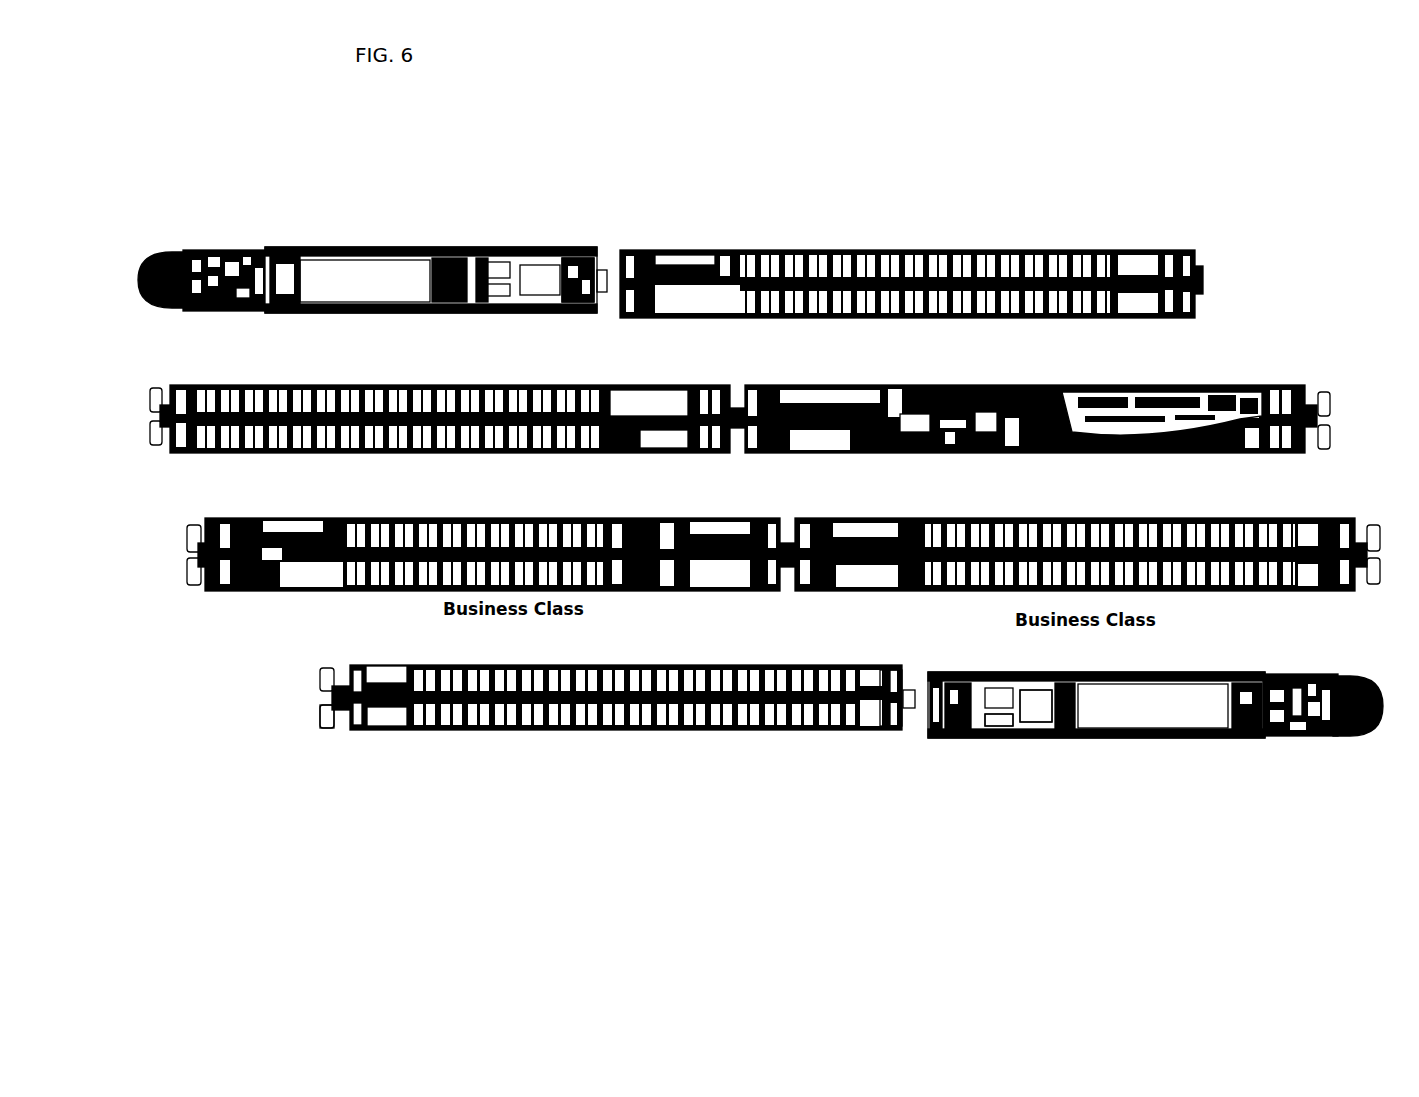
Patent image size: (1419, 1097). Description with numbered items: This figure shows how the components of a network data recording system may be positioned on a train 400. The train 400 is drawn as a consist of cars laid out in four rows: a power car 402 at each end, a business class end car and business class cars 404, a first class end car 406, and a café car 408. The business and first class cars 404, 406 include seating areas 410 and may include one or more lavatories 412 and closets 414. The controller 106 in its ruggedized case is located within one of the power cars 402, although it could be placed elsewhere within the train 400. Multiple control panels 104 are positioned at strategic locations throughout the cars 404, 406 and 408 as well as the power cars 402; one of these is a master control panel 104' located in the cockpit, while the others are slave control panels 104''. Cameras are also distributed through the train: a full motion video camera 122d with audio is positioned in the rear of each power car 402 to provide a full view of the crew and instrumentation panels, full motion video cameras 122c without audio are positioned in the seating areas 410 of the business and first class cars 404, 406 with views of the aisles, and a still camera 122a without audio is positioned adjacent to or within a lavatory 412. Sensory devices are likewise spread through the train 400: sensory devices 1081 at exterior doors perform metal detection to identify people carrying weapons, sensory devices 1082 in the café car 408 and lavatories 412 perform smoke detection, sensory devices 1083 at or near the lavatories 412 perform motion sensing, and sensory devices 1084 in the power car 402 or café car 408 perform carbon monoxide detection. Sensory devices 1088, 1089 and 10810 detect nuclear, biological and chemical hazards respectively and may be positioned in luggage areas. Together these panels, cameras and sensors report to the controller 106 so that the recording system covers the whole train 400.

The train 400 is at (550, 114).
The power car 402 is at (312, 232).
The business class car 404 is at (856, 232).
The first class car 406 is at (502, 752).
The café car 408 is at (1260, 372).
The seating area 410 is at (345, 455).
The lavatory 412 is at (376, 655).
The closet 414 is at (660, 386).
The control panel 104 is at (470, 338).
The master control panel 104' is at (1011, 678).
The slave control panel 104'' is at (909, 550).
The controller 106 is at (565, 248).
The sensory device 1081 is at (341, 718).
The sensory device 1082 is at (978, 392).
The sensory device 1083 is at (356, 665).
The sensory device 1084 is at (1003, 738).
The sensory device 1088 is at (888, 735).
The sensory device 1089 is at (481, 248).
The sensory device 10810 is at (899, 735).
The still camera without audio 122a is at (410, 668).
The full motion video camera without audio 122c is at (700, 388).
The full motion video camera with audio 122d is at (358, 724).